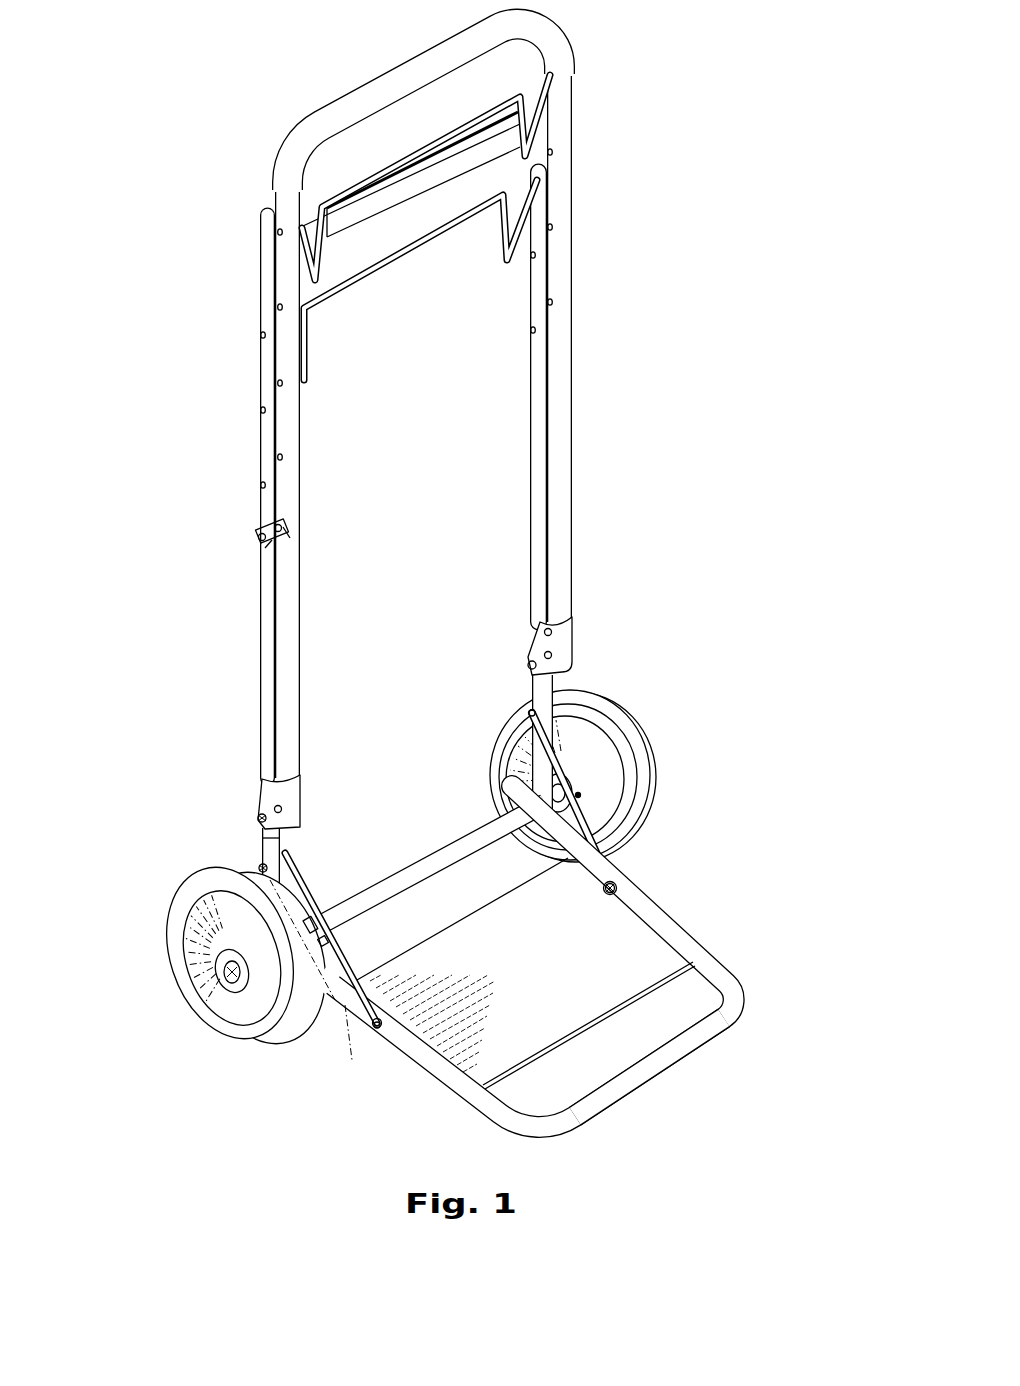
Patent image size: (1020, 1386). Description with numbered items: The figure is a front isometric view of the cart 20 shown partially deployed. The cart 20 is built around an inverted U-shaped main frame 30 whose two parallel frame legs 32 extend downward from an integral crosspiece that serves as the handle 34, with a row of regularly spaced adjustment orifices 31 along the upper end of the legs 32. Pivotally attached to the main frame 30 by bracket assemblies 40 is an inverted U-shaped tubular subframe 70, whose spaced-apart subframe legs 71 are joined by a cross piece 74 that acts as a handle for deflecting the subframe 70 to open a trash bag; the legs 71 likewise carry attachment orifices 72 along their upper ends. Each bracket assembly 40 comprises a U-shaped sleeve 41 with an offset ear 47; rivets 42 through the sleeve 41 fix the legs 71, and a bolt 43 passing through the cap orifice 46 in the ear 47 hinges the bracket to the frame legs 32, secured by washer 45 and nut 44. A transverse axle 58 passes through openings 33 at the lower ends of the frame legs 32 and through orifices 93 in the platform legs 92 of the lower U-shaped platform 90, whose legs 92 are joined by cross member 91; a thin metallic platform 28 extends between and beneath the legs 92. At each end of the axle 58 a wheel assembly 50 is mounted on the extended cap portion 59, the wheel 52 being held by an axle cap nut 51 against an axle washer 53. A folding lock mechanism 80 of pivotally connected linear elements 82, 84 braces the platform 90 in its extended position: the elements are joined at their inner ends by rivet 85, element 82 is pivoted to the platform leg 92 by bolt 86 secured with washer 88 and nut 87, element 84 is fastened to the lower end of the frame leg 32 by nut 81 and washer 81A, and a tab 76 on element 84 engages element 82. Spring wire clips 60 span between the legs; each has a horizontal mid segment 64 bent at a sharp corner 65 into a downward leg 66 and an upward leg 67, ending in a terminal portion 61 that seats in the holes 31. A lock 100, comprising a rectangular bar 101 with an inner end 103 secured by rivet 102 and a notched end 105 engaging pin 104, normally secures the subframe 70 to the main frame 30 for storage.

The cart 20 is at (320, 22).
The platform 28 is at (547, 1023).
The main frame 30 is at (235, 288).
The adjustment orifices 31 is at (263, 336).
The frame legs 32 is at (533, 487).
The openings 33 is at (505, 773).
The handle 34 is at (411, 170).
The bracket assembly 40 is at (610, 650).
The sleeve 41 is at (567, 640).
The rivets 42 is at (548, 632).
The bolt 43 is at (532, 665).
The nut 44 is at (258, 817).
The washer 45 is at (262, 816).
The cap orifice 46 is at (570, 680).
The offset ear 47 is at (548, 655).
The wheel assembly 50 is at (668, 738).
The axle cap nut 51 is at (232, 978).
The wheel 52 is at (308, 1023).
The axle washer 53 is at (240, 993).
The axle 58 is at (437, 857).
The extended cap portion 59 is at (193, 1023).
The spring wire clip 60 is at (395, 240).
The terminal portion 61 is at (552, 83).
The mid segment 64 is at (488, 117).
The sharp corner 65 is at (328, 211).
The leg 66 is at (516, 130).
The leg 67 is at (540, 117).
The subframe 70 is at (592, 38).
The subframe legs 71 is at (571, 412).
The hook holes 72 is at (280, 232).
The cross piece 74 is at (437, 53).
The tab 76 is at (617, 810).
The folding lock mechanism 80 is at (330, 878).
The nut 81 is at (258, 868).
The washer 81A is at (258, 843).
The linear element 82 is at (357, 978).
The linear element 84 is at (290, 850).
The rivet 85 is at (372, 1020).
The bolt 86 is at (608, 890).
The nut 87 is at (612, 880).
The washer 88 is at (618, 893).
The platform 90 is at (768, 1040).
The cross member 91 is at (657, 1080).
The platform legs 92 is at (690, 942).
The orifices 93 is at (527, 712).
The lock 100 is at (236, 527).
The rectangular bar 101 is at (262, 524).
The rivet 102 is at (262, 538).
The inner end 103 is at (268, 552).
The pin 104 is at (285, 535).
The notched end 105 is at (281, 523).